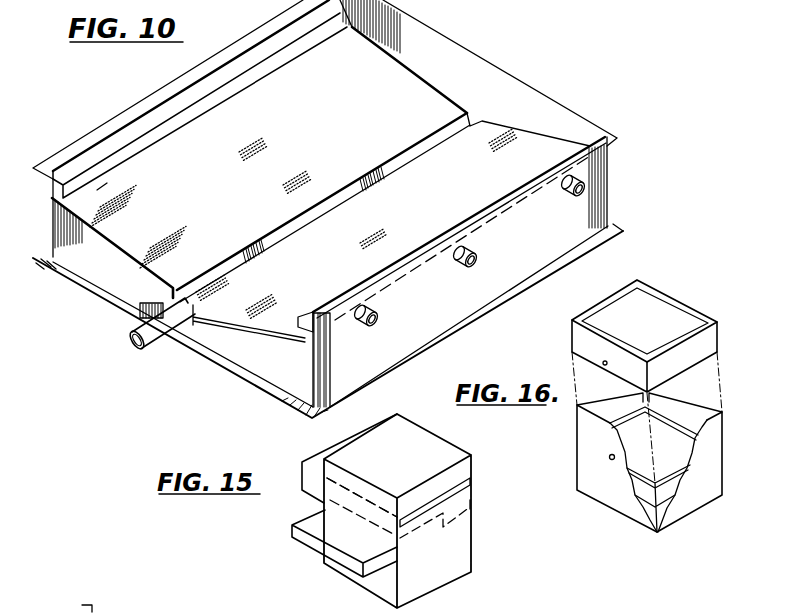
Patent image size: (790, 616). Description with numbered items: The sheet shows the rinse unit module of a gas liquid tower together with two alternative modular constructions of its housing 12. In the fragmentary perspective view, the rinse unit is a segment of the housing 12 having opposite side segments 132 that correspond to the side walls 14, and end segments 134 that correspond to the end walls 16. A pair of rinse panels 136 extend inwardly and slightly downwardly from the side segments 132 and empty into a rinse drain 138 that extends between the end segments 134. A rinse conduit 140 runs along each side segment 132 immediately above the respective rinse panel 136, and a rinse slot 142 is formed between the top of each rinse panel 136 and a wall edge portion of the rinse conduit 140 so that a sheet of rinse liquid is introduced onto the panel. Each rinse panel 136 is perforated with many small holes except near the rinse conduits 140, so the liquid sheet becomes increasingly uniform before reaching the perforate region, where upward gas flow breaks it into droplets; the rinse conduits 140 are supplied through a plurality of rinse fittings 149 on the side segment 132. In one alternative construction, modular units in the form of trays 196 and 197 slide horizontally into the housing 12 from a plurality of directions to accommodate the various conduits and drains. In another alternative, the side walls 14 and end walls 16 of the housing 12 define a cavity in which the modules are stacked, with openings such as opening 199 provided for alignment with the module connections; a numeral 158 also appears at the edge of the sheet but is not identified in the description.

In FIG. 10, the side segment 132 is at (78, 232).
In FIG. 10, the end segment 134 is at (530, 96).
In FIG. 10, the rinse panel 136 is at (305, 117).
In FIG. 10, the rinse drain 138 is at (170, 349).
In FIG. 10, the rinse conduit 140 is at (100, 137).
In FIG. 10, the rinse slot 142 is at (107, 184).
In FIG. 10, the rinse fitting 149 is at (379, 309).
In FIG. 16, the housing 12 is at (623, 414).
In FIG. 15, the housing 12 is at (357, 511).
In FIG. 16, the side wall 14 is at (709, 489).
In FIG. 15, the side wall 14 is at (443, 568).
In FIG. 16, the end wall 16 is at (612, 491).
In FIG. 15, the end wall 16 is at (330, 597).
In FIG. 15, the tray 196 is at (310, 495).
In FIG. 15, the tray 197 is at (292, 529).
In FIG. 16, the opening 199 is at (609, 457).
In FIG. 15, the element 158 is at (70, 603).